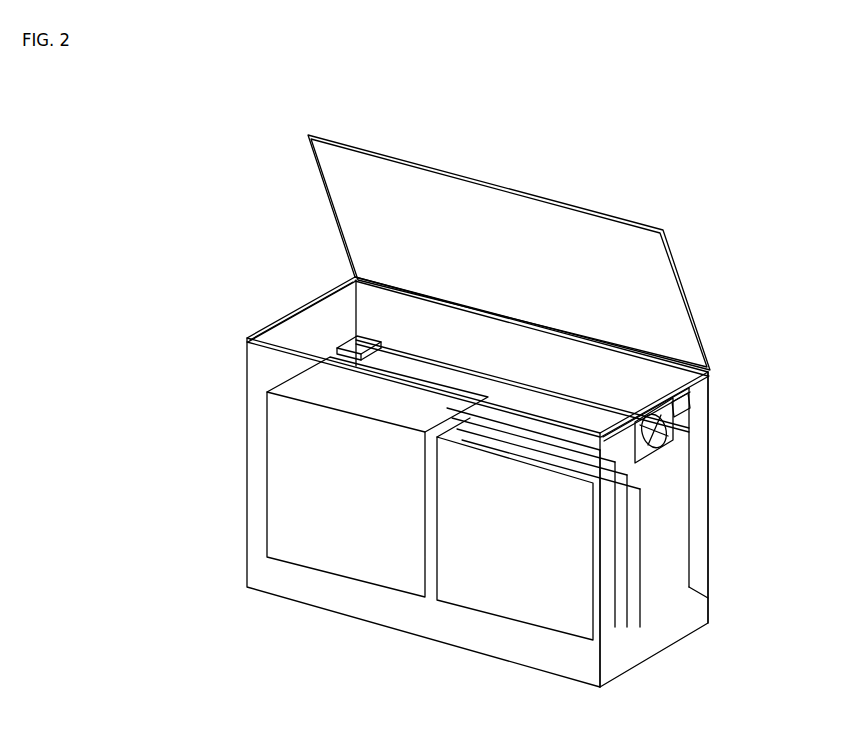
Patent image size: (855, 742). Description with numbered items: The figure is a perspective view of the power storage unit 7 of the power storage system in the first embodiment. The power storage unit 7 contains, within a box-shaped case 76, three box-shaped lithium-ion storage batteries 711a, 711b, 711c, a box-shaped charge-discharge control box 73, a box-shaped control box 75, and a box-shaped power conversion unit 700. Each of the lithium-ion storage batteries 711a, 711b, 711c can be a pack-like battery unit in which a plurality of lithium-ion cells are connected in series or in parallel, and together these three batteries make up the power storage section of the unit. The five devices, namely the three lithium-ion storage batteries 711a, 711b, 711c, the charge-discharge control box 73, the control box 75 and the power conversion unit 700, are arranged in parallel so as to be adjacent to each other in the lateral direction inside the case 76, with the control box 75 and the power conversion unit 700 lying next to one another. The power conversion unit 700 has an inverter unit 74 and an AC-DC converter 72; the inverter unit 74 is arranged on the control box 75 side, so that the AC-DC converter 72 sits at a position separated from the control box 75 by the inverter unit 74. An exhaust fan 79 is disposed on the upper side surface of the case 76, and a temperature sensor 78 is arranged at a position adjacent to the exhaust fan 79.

The power storage unit 7 is at (710, 276).
The case 76 is at (710, 388).
The temperature sensor 78 is at (688, 400).
The exhaust fan 79 is at (681, 429).
The lithium-ion storage battery 711a is at (348, 332).
The lithium-ion storage battery 711b is at (268, 329).
The lithium-ion storage battery 711c is at (682, 474).
The charge-discharge control box 73 is at (633, 512).
The control box 75 is at (612, 540).
The inverter unit 74 is at (610, 567).
The AC-DC converter 72 is at (533, 572).
The power conversion unit 700 is at (760, 568).